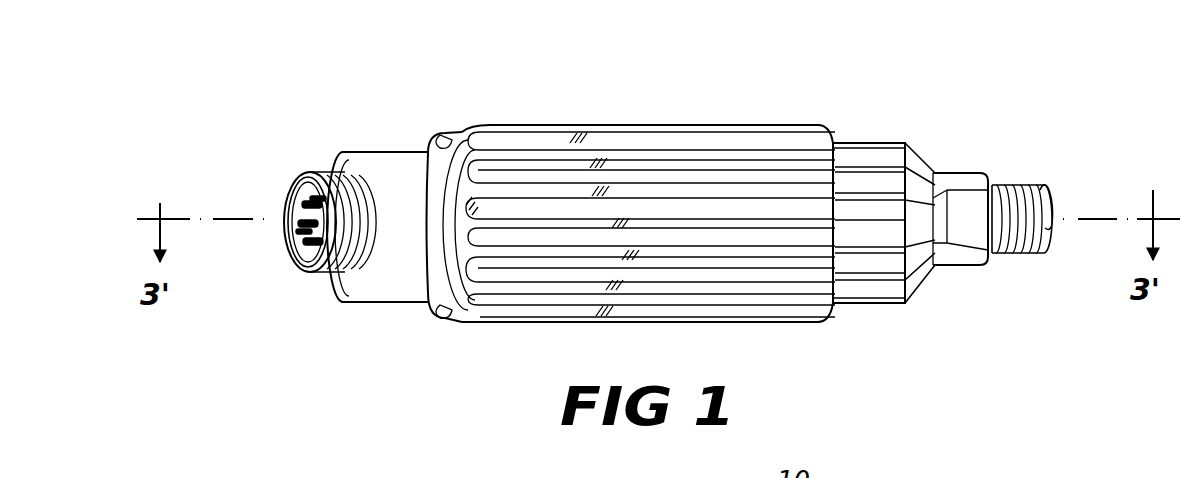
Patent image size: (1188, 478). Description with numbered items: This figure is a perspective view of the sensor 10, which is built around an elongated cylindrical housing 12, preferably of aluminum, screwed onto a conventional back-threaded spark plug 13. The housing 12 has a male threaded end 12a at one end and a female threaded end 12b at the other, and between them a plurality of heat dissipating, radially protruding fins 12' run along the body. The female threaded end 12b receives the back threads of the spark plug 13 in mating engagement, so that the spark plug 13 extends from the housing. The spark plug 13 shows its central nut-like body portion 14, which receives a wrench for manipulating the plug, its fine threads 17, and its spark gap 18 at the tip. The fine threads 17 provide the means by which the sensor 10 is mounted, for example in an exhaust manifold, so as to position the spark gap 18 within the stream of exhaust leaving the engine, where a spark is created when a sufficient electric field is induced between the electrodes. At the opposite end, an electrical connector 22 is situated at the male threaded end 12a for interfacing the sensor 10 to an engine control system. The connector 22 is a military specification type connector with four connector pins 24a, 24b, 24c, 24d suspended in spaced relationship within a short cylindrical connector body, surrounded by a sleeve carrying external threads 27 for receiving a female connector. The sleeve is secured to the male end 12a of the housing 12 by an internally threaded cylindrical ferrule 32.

The sensor 10 is at (875, 62).
The elongated cylindrical housing 12 is at (648, 189).
The male threaded end 12a is at (412, 133).
The female threaded end 12b is at (854, 133).
The heat dissipating fins 12' is at (656, 119).
The spark plug 13 is at (947, 158).
The central nut-like body portion 14 is at (948, 208).
The fine threads 17 is at (1008, 260).
The spark gap 18 is at (1050, 245).
The electrical connector 22 is at (266, 260).
The connector pin 24a is at (288, 207).
The connector pin 24b is at (291, 192).
The connector pin 24c is at (313, 266).
The connector pin 24d is at (288, 237).
The external threads 27 is at (323, 173).
The internally threaded cylindrical ferrule 32 is at (387, 165).